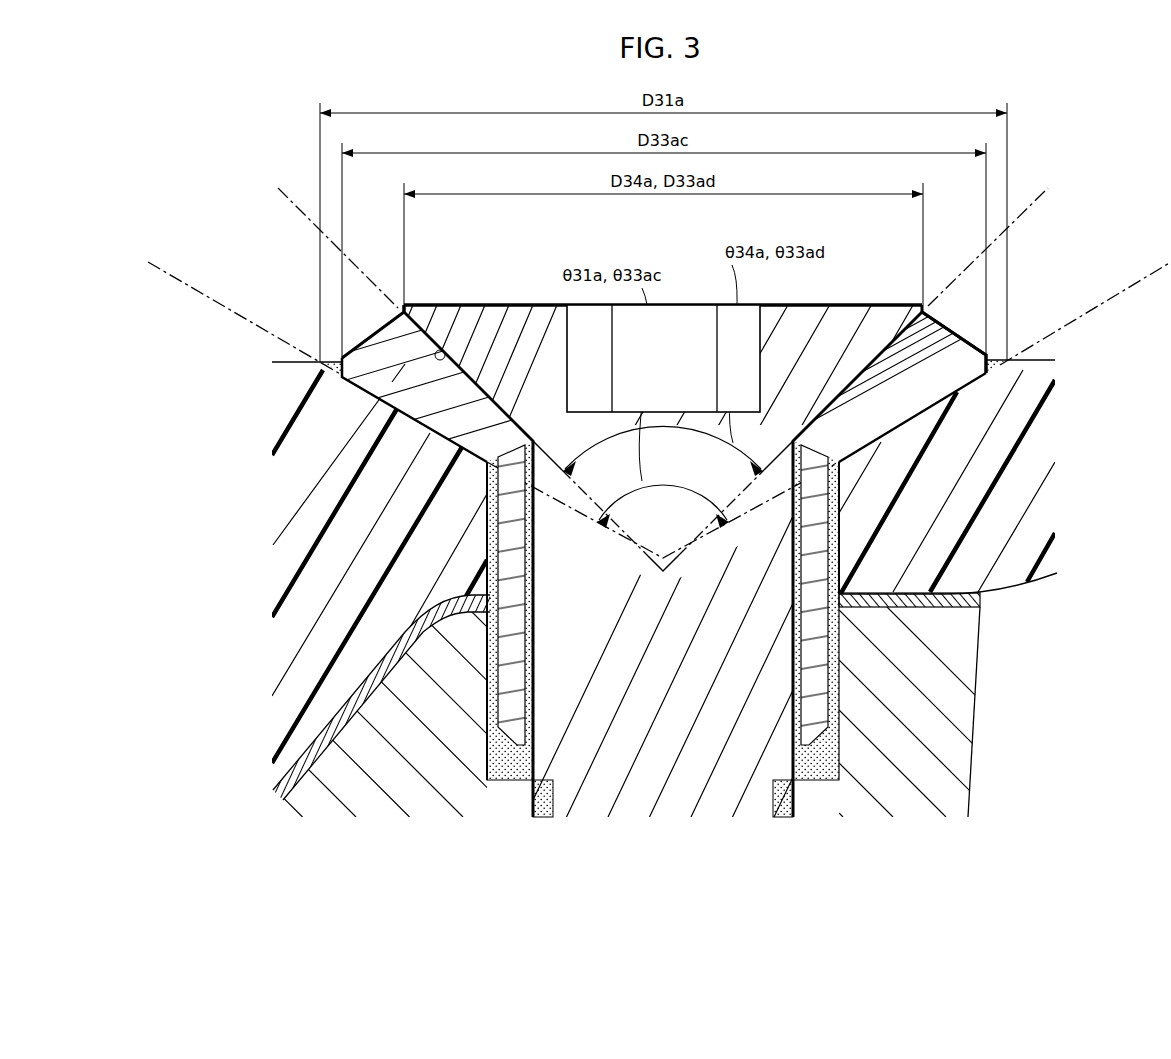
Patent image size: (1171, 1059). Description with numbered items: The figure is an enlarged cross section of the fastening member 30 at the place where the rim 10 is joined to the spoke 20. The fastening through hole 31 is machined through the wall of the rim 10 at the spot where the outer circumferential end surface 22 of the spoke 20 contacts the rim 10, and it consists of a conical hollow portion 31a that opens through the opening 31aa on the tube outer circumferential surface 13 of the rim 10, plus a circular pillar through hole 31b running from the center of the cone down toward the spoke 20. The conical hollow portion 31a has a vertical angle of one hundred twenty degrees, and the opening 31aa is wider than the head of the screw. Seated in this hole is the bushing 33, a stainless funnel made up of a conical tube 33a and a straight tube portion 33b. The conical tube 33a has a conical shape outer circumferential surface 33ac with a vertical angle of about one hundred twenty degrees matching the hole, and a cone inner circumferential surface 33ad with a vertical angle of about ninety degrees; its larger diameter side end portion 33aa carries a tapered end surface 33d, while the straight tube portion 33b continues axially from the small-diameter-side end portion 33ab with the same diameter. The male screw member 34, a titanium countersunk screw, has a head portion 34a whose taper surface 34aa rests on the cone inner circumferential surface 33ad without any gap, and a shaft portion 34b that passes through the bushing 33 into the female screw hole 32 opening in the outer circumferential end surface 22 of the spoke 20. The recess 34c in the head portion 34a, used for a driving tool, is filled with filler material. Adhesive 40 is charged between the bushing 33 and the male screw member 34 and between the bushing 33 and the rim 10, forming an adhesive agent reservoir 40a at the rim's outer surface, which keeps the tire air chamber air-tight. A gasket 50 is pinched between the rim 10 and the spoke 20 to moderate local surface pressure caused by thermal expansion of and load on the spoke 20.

The fastening member 30 is at (234, 196).
The tube outer circumferential surface 13 is at (292, 362).
The larger diameter side end portion 33aa is at (376, 322).
The adhesive agent reservoir 40a is at (334, 358).
The conical shape outer circumferential surface 33ac is at (389, 379).
The conical tube 33a is at (410, 414).
The small-diameter-side end portion 33ab is at (482, 466).
The bushing 33 is at (492, 520).
The gasket 50 is at (392, 657).
The outer circumferential end surface 22 is at (338, 714).
The cone inner circumferential surface 33ad is at (418, 301).
The head portion 34a is at (505, 320).
The taper surface 34aa is at (443, 350).
The male screw member 34 is at (690, 299).
The recess 34c is at (761, 322).
The end surface 33d is at (928, 308).
The opening 31aa is at (987, 350).
The conical hollow portion 31a is at (963, 391).
The through hole 31b is at (836, 497).
The fastening through hole 31 is at (1122, 432).
The rim 10 is at (1012, 591).
The spoke 20 is at (977, 709).
The straight tube portion 33b is at (490, 700).
The adhesive 40 is at (513, 760).
The shaft portion 34b is at (641, 780).
The female screw hole 32 is at (817, 772).